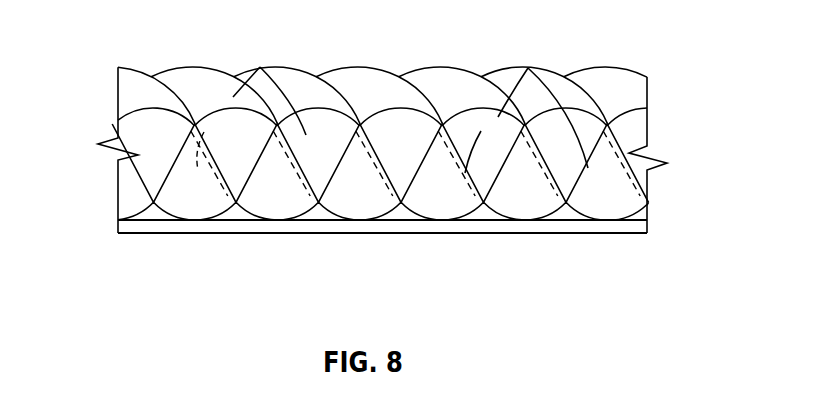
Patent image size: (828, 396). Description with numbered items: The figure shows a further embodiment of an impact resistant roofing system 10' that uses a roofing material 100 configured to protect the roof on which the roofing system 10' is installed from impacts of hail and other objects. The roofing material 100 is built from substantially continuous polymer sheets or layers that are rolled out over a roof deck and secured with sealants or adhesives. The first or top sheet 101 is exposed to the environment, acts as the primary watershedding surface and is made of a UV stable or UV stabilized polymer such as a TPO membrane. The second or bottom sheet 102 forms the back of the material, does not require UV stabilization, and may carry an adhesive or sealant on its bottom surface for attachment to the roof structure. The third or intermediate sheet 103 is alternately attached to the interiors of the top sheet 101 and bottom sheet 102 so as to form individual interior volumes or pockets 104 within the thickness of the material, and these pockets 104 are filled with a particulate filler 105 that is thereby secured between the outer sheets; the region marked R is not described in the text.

The impact resistant roofing system 10' is at (109, 273).
The roofing material 100 is at (537, 228).
The first or top sheet 101 is at (360, 82).
The second or bottom sheet 102 is at (357, 222).
The third or intermediate sheet 103 is at (528, 68).
The interior volumes or pockets 104 is at (260, 67).
The filler 105 is at (398, 175).
The substrate region R is at (597, 228).